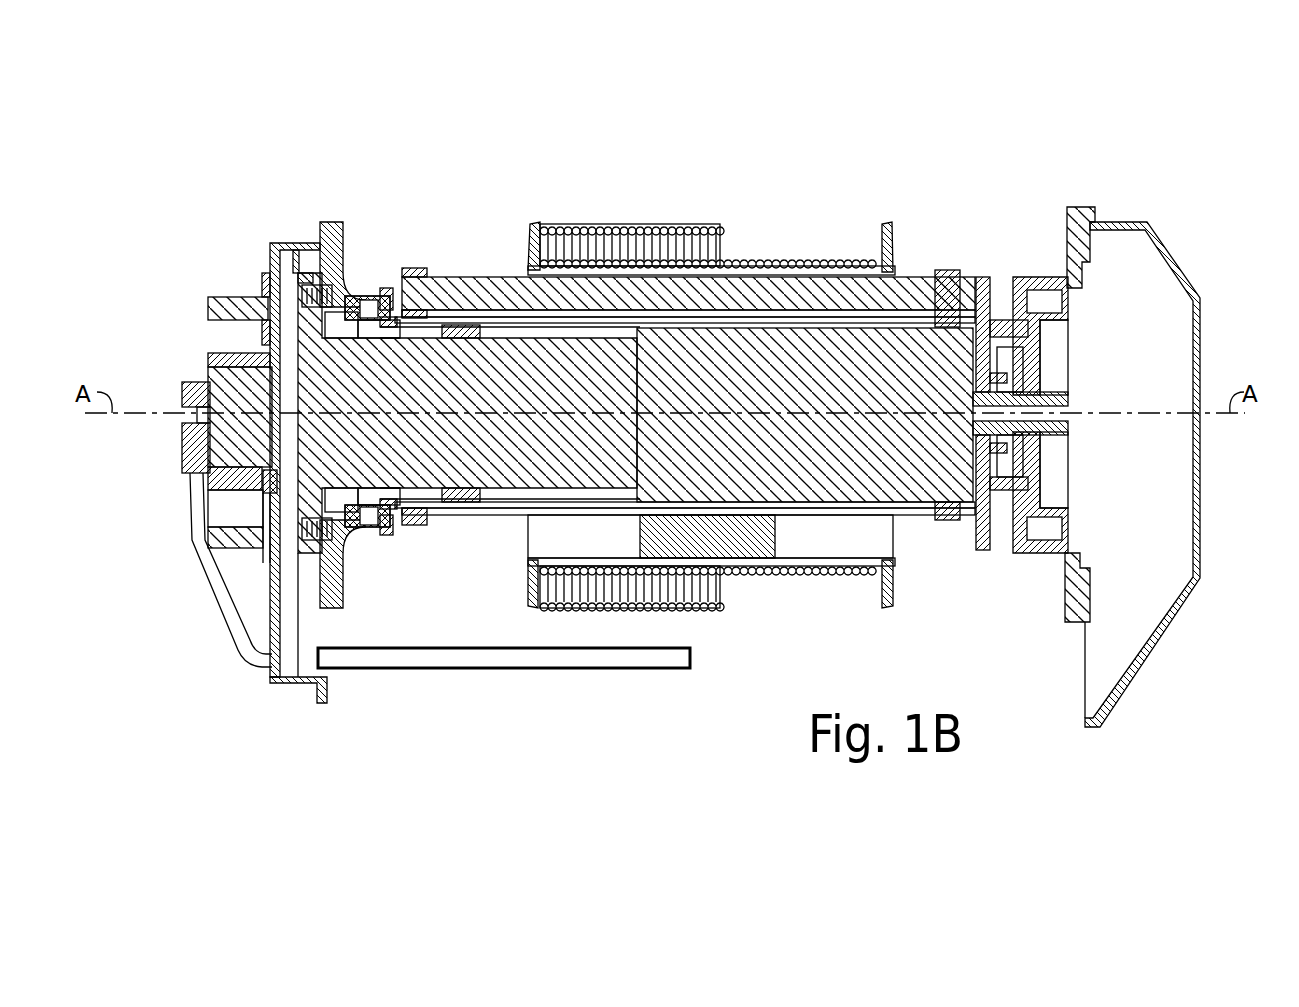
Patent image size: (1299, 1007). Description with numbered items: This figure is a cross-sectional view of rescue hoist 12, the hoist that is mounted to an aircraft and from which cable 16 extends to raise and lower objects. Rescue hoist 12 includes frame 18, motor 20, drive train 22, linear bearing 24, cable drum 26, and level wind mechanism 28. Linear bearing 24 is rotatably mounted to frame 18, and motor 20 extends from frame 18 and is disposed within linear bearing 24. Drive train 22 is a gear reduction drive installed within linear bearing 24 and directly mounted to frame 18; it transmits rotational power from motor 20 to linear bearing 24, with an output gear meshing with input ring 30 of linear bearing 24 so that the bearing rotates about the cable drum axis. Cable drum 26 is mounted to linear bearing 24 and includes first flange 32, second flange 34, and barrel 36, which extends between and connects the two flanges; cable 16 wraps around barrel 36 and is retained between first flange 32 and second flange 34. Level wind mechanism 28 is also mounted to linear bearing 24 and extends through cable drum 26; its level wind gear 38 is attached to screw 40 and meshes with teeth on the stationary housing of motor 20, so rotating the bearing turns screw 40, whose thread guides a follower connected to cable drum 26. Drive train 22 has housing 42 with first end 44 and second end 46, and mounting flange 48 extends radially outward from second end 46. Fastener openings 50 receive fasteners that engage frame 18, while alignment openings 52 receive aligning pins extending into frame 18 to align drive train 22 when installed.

The rescue hoist 12 is at (368, 157).
The cable 16 is at (705, 228).
The frame 18 is at (332, 222).
The motor 20 is at (948, 485).
The drive train 22 is at (510, 488).
The linear bearing 24 is at (414, 510).
The cable drum 26 is at (875, 538).
The level wind mechanism 28 is at (914, 274).
The input ring 30 is at (465, 504).
The first flange 32 is at (528, 243).
The second flange 34 is at (890, 250).
The barrel 36 is at (783, 262).
The level wind gear 38 is at (986, 300).
The screw 40 is at (942, 292).
The housing 42 is at (290, 327).
The first end 44 is at (621, 488).
The second end 46 is at (303, 472).
The mounting flange 48 is at (314, 286).
The fastener openings 50 is at (342, 292).
The alignment openings 52 is at (343, 540).